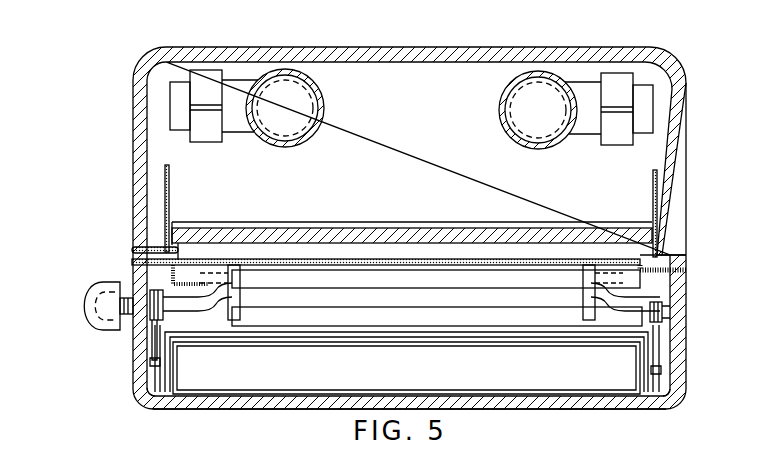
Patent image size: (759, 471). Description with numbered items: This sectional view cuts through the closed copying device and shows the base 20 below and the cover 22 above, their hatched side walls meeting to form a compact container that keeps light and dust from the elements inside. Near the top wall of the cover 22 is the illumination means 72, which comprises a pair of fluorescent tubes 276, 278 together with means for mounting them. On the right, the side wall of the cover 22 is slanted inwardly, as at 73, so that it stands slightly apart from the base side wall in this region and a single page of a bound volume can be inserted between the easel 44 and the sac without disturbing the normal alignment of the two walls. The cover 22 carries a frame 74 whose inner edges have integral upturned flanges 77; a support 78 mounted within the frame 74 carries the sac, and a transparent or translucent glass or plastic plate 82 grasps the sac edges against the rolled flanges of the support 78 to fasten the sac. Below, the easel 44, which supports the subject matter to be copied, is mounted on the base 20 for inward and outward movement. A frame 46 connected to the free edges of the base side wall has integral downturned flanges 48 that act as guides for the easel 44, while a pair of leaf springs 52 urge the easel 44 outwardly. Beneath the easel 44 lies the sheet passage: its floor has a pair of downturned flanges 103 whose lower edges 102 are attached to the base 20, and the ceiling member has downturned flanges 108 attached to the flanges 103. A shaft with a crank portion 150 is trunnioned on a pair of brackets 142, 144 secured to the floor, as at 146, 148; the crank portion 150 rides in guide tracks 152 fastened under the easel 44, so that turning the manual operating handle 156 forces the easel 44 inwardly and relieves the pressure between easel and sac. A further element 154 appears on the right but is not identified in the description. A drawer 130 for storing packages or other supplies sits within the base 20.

The base 20 is at (582, 411).
The cover 22 is at (649, 46).
The easel 44 is at (388, 272).
The frame 46 is at (133, 262).
The downturned flanges 48 is at (668, 291).
The leaf springs 52 is at (240, 315).
The illumination means 72 is at (244, 138).
The inwardly slanted portion of side wall 73 is at (675, 152).
The frame 74 is at (155, 250).
The upturned flanges 77 is at (170, 181).
The support 78 is at (178, 235).
The plate 82 is at (385, 229).
The lower edges of flanges 102 is at (153, 399).
The downturned flanges 103 is at (152, 360).
The downturned flanges 108 is at (190, 346).
The drawer 130 is at (177, 378).
The bracket 142 is at (149, 319).
The bracket 144 is at (663, 321).
The securing point 146 is at (163, 383).
The securing point 148 is at (661, 387).
The crank portion 150 is at (428, 308).
The guide tracks 152 is at (250, 290).
The outlet pipe 154 is at (571, 291).
The manual operating handle 156 is at (88, 296).
The fluorescent tube 276 is at (498, 110).
The fluorescent tube 278 is at (325, 109).